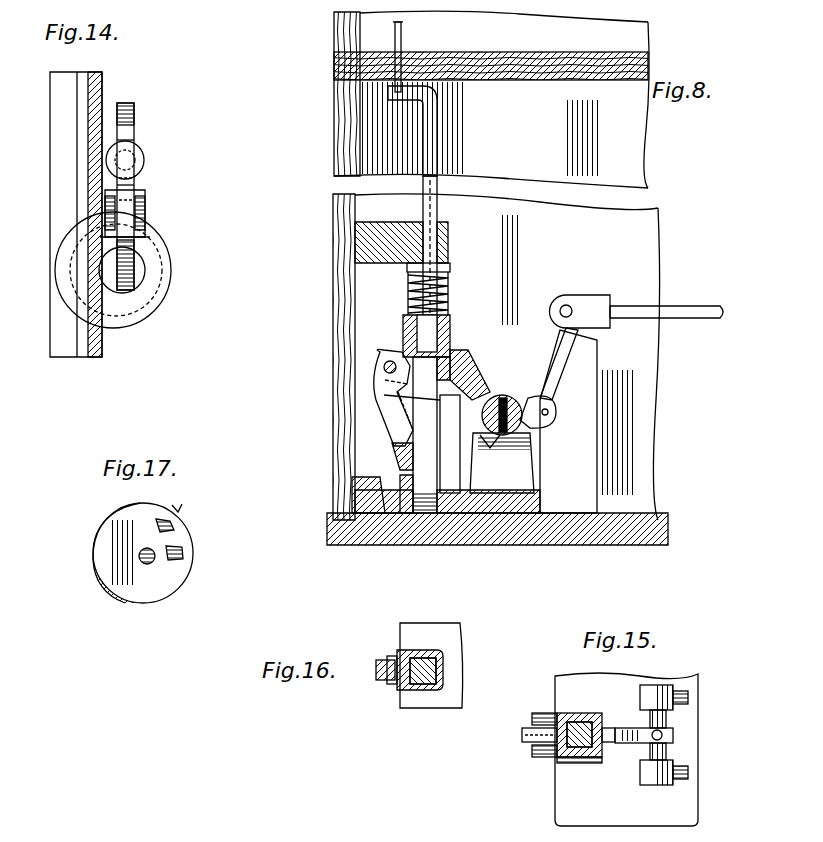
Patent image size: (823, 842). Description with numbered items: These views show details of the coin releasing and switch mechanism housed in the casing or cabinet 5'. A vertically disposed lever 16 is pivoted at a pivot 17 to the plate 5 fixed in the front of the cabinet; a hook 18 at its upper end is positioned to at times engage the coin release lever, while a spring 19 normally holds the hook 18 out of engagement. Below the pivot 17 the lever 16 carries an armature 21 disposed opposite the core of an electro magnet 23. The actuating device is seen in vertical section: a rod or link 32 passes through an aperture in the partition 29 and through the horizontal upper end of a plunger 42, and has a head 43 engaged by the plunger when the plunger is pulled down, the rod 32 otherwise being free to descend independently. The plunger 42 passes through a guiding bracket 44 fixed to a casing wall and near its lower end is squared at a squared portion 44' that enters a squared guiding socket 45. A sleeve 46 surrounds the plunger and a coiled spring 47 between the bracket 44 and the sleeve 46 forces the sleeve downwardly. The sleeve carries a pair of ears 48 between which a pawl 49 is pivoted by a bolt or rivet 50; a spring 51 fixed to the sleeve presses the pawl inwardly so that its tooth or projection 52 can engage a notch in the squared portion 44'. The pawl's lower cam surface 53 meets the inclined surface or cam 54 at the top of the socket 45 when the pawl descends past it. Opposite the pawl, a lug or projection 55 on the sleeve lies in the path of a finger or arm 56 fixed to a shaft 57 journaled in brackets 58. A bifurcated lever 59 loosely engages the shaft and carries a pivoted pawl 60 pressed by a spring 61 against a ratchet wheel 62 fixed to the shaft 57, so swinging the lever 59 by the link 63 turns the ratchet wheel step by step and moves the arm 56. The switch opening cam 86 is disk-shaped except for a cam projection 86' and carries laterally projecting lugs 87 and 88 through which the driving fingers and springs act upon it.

In FIG. 14, the plate 5 is at (59, 214).
In FIG. 8, the casing or cabinet 5' is at (322, 357).
In FIG. 14, the lever 16 is at (128, 180).
In FIG. 14, the pivot 17 is at (145, 215).
In FIG. 14, the hook 18 is at (135, 114).
In FIG. 14, the spring 19 is at (143, 160).
In FIG. 14, the armature 21 is at (142, 270).
In FIG. 14, the electro magnet 23 is at (157, 296).
In FIG. 8, the partition 29 is at (498, 64).
In FIG. 8, the rod or link 32 is at (402, 34).
In FIG. 8, the plunger 42 is at (438, 122).
In FIG. 8, the head 43 is at (388, 93).
In FIG. 8, the guiding bracket 44 is at (426, 242).
In FIG. 8, the squared portion 44' is at (461, 419).
In FIG. 16, the squared portion 44' is at (434, 641).
In FIG. 15, the squared portion 44' is at (579, 779).
In FIG. 8, the squared guiding socket 45 is at (425, 513).
In FIG. 16, the squared guiding socket 45 is at (432, 692).
In FIG. 8, the sleeve 46 is at (450, 330).
In FIG. 15, the sleeve 46 is at (570, 720).
In FIG. 8, the coiled spring 47 is at (410, 290).
In FIG. 8, the ears 48 is at (384, 353).
In FIG. 15, the ears 48 is at (540, 713).
In FIG. 8, the pawl 49 is at (403, 412).
In FIG. 16, the pawl 49 is at (381, 680).
In FIG. 8, the bolt or rivet 50 is at (390, 360).
In FIG. 8, the spring 51 is at (380, 374).
In FIG. 15, the spring 51 is at (522, 736).
In FIG. 8, the tooth or projection 52 is at (398, 392).
In FIG. 8, the cam surface 53 is at (402, 452).
In FIG. 8, the inclined surface or cam 54 is at (400, 480).
In FIG. 8, the lug or projection 55 is at (462, 372).
In FIG. 15, the lug or projection 55 is at (608, 728).
In FIG. 8, the finger or arm 56 is at (508, 398).
In FIG. 15, the finger or arm 56 is at (624, 745).
In FIG. 8, the shaft 57 is at (552, 390).
In FIG. 15, the shaft 57 is at (668, 753).
In FIG. 8, the brackets 58 is at (525, 470).
In FIG. 15, the brackets 58 is at (672, 690).
In FIG. 8, the bifurcated lever 59 is at (543, 340).
In FIG. 8, the pivoted pawl 60 is at (548, 426).
In FIG. 8, the spring 61 is at (552, 410).
In FIG. 8, the ratchet wheel 62 is at (492, 450).
In FIG. 8, the link 63 is at (648, 305).
In FIG. 17, the cam 86 is at (121, 553).
In FIG. 17, the cam projection 86' is at (213, 497).
In FIG. 17, the lugs or pins 87 is at (176, 528).
In FIG. 17, the lugs or pins 88 is at (184, 555).